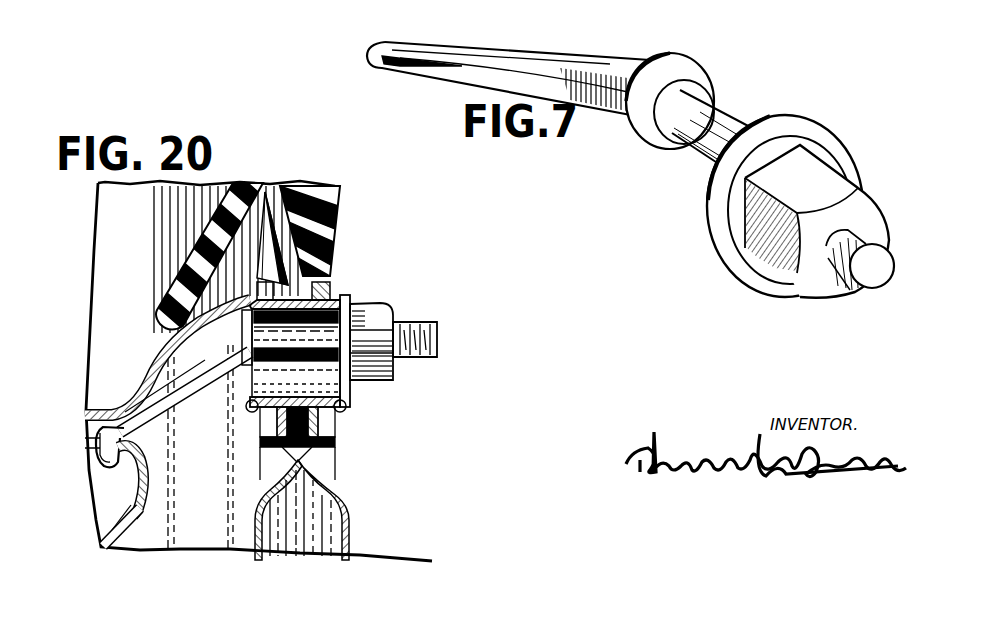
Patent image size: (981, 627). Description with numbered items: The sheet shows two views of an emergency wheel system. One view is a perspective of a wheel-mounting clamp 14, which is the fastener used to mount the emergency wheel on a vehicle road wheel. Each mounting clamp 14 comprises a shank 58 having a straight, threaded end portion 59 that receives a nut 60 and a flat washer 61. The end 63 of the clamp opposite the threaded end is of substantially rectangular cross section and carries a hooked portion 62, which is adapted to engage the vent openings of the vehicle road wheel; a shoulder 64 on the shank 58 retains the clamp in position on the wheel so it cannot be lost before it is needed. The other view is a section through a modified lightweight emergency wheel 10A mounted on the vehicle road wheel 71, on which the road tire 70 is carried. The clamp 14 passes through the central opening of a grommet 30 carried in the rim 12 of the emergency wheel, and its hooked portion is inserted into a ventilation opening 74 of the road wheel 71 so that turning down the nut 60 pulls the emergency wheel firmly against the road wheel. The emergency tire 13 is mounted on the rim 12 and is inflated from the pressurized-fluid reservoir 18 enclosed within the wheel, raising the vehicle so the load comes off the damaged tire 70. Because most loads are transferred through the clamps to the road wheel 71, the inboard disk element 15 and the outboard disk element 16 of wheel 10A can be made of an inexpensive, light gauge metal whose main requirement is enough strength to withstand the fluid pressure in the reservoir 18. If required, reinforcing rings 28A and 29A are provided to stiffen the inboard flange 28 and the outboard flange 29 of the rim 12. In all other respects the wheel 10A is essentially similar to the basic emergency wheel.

In FIG. 20, the tire 70 is at (250, 183).
In FIG. 20, the tire of the emergency wheel 13 is at (322, 185).
In FIG. 20, the rim 12 is at (328, 294).
In FIG. 20, the wheel-mounting clamp 14 is at (389, 298).
In FIG. 7, the wheel-mounting clamp 14 is at (728, 66).
In FIG. 20, the ventilation opening 74 is at (100, 432).
In FIG. 20, the vehicle road wheel 71 is at (158, 473).
In FIG. 20, the grommet 30 is at (246, 403).
In FIG. 20, the inboard flange 28 is at (278, 420).
In FIG. 20, the outboard flange 29 is at (318, 424).
In FIG. 20, the reinforcing ring 28A is at (262, 440).
In FIG. 20, the reinforcing ring 29A is at (330, 442).
In FIG. 20, the inboard disk element 15 is at (256, 516).
In FIG. 20, the outboard disk element 16 is at (346, 508).
In FIG. 20, the reservoir 18 is at (318, 532).
In FIG. 20, the emergency wheel 10A is at (238, 536).
In FIG. 7, the end 63 is at (368, 50).
In FIG. 7, the hooked portion 62 is at (376, 66).
In FIG. 7, the shoulder 64 is at (658, 56).
In FIG. 7, the shank 58 is at (698, 150).
In FIG. 7, the flat washer 61 is at (812, 136).
In FIG. 7, the nut 60 is at (858, 192).
In FIG. 7, the threaded end portion 59 is at (882, 290).